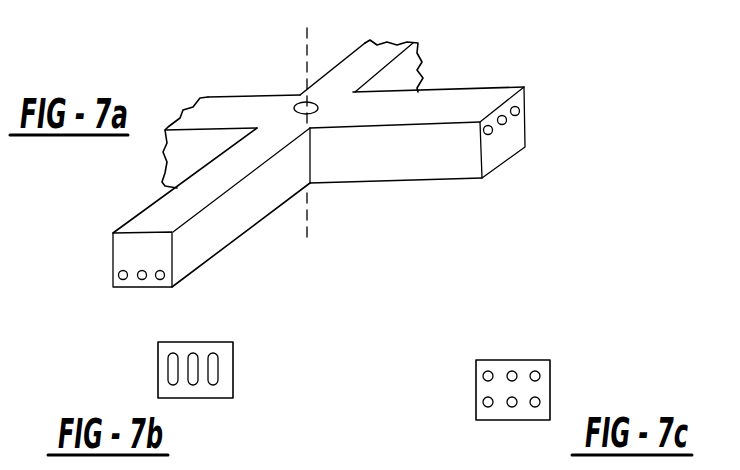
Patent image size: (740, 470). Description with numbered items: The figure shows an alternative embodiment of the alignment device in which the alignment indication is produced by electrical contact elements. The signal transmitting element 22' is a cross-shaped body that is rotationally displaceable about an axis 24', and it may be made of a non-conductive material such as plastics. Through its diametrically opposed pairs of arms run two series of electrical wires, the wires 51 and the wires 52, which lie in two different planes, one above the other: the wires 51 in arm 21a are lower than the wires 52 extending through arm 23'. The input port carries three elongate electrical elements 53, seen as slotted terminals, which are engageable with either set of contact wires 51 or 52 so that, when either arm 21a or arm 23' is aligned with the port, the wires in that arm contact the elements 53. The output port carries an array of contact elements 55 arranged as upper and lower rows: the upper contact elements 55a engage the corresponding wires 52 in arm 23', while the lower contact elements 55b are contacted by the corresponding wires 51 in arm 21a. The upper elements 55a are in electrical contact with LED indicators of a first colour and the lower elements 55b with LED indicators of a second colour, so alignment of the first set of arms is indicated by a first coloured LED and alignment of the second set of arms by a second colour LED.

In FIG. 7A, the arm 21a is at (243, 212).
In FIG. 7A, the signal transmitting element 22' is at (388, 53).
In FIG. 7A, the arm 23' is at (430, 99).
In FIG. 7A, the axis 24' is at (272, 131).
In FIG. 7A, the electrical wires 51 is at (120, 283).
In FIG. 7A, the electrical wires 52 is at (520, 115).
In FIG. 7B, the electrical elements 53 is at (167, 370).
In FIG. 7C, the contact elements 55 is at (543, 402).
In FIG. 7C, the upper contact elements 55a is at (483, 376).
In FIG. 7C, the lower contact elements 55b is at (489, 407).